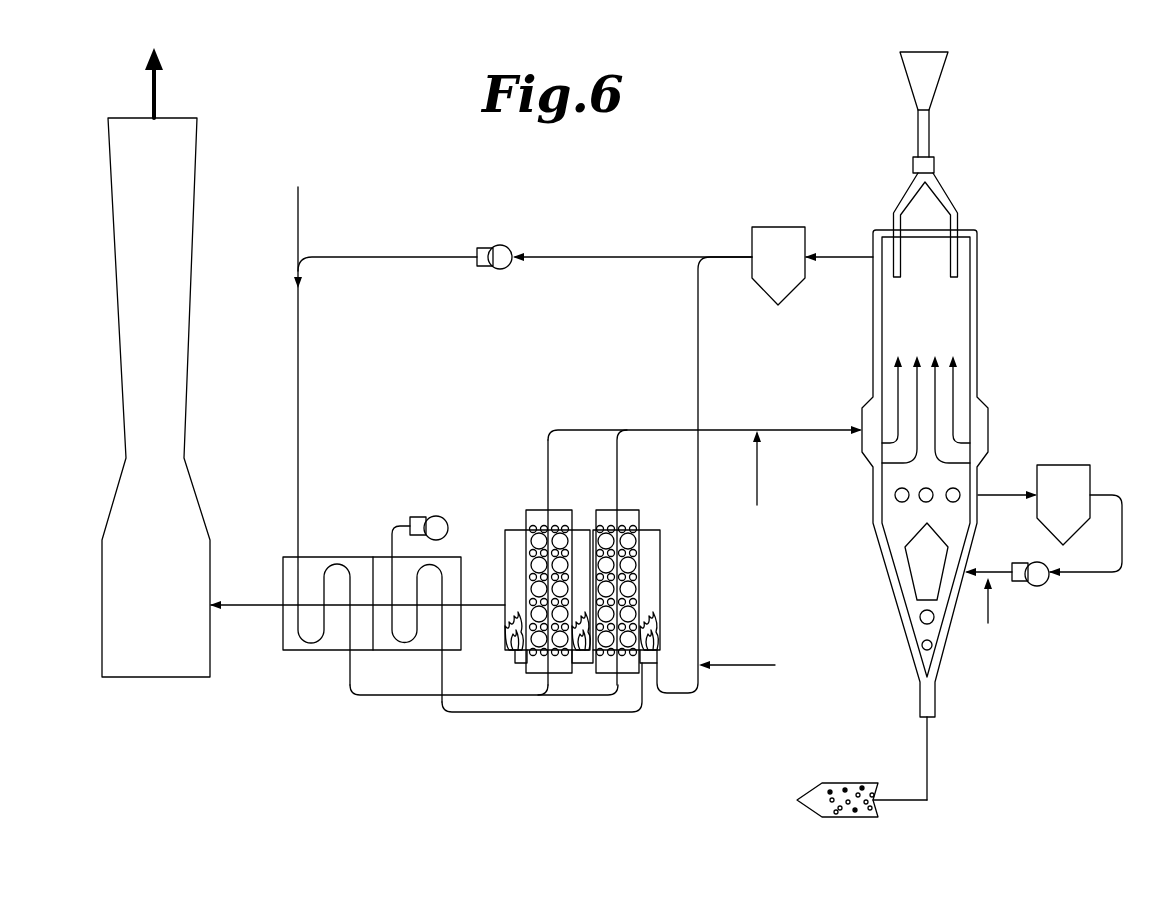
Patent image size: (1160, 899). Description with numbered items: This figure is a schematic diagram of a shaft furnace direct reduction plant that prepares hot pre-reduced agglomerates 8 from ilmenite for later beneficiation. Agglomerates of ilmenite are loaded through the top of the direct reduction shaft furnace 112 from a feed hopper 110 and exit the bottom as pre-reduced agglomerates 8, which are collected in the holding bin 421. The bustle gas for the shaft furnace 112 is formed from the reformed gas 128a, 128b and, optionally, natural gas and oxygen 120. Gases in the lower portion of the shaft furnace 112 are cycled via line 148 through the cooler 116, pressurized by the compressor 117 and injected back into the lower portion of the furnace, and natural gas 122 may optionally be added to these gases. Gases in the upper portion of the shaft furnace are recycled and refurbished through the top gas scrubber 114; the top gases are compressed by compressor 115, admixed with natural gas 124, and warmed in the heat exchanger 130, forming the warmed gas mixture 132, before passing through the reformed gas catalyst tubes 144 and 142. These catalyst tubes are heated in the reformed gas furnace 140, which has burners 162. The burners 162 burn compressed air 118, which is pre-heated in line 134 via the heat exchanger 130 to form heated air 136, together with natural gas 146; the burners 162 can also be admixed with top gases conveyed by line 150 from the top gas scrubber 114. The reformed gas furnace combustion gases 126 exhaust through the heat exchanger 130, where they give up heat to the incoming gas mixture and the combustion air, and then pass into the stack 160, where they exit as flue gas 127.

The pre-reduced agglomerates 8 is at (823, 795).
The feed hopper 110 is at (922, 52).
The direct reduction shaft furnace 112 is at (980, 292).
The top gas scrubber 114 is at (770, 235).
The compressor 115 is at (507, 250).
The cooler 116 is at (1065, 490).
The compressor 117 is at (1042, 583).
The compressed air 118 is at (433, 520).
The natural gas and oxygen 120 is at (757, 480).
The natural gas 122 is at (995, 615).
The natural gas 124 is at (299, 222).
The reformed gas furnace combustion gases 126 is at (255, 607).
The flue gas 127 is at (165, 60).
The reformed gas 128a is at (618, 487).
The reformed gas 128b is at (677, 428).
The heat exchanger 130 is at (340, 640).
The warmed gas mixture 132 is at (395, 698).
The line 134 is at (393, 528).
The heated air 136 is at (497, 715).
The reformed gas furnace 140 is at (512, 527).
The reformed gas catalyst tube 142 is at (633, 542).
The reformed gas catalyst tube 144 is at (562, 515).
The natural gas 146 is at (759, 665).
The line 148 is at (998, 492).
The line 150 is at (699, 373).
The stack 160 is at (178, 635).
The burners 162 is at (583, 642).
The holding bin 421 is at (808, 803).